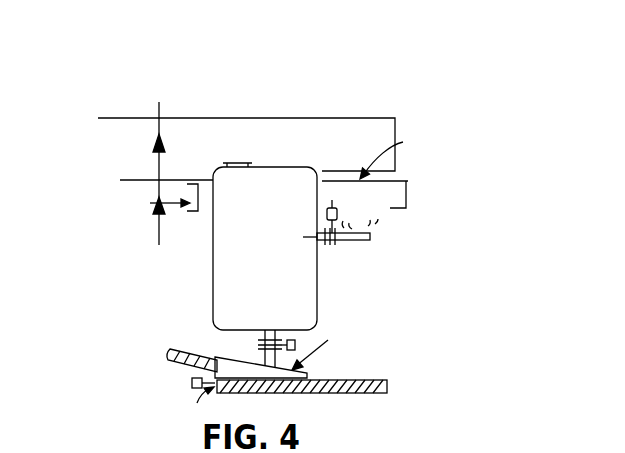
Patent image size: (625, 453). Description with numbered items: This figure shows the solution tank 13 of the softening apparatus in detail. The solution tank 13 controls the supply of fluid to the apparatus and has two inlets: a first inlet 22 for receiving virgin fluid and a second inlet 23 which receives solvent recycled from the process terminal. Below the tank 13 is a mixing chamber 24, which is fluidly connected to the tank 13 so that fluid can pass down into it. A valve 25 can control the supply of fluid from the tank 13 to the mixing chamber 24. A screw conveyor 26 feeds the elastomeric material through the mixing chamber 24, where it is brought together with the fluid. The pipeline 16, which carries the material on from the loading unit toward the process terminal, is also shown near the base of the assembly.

The solution tank 13 is at (340, 64).
The pipeline 16 is at (346, 375).
The first inlet 22 is at (225, 152).
The second inlet 23 is at (378, 233).
The mixing chamber 24 is at (233, 352).
The valve 25 is at (190, 382).
The screw conveyor 26 is at (191, 338).